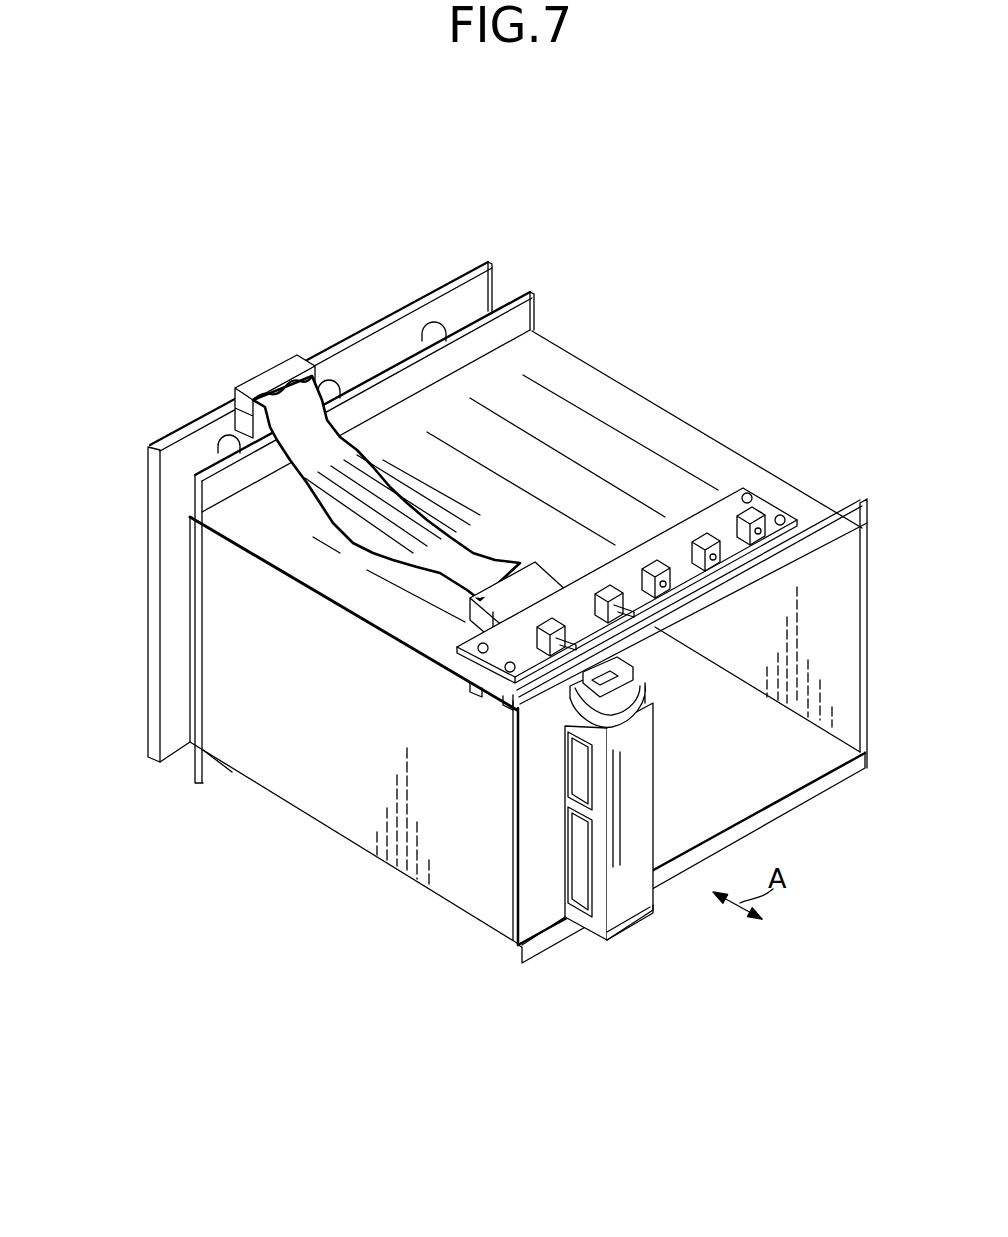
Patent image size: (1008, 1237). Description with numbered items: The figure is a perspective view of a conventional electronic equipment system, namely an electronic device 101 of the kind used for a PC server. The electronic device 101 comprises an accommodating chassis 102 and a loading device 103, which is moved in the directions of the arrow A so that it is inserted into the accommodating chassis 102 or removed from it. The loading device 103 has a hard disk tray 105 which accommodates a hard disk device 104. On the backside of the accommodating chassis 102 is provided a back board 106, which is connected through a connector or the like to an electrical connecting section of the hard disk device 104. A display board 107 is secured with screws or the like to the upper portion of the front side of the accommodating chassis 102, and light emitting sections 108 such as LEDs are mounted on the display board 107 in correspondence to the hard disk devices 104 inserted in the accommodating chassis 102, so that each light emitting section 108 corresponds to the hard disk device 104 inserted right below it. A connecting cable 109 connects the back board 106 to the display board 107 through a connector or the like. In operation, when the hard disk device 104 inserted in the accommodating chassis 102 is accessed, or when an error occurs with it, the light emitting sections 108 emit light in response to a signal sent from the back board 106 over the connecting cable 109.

The electronic device 101 is at (887, 460).
The accommodating chassis 102 is at (340, 836).
The loading device 103 is at (682, 940).
The hard disk device 104 is at (618, 803).
The hard disk tray 105 is at (597, 933).
The back board 106 is at (148, 737).
The display board 107 is at (770, 514).
The light emitting sections 108 is at (555, 636).
The connecting cable 109 is at (300, 484).